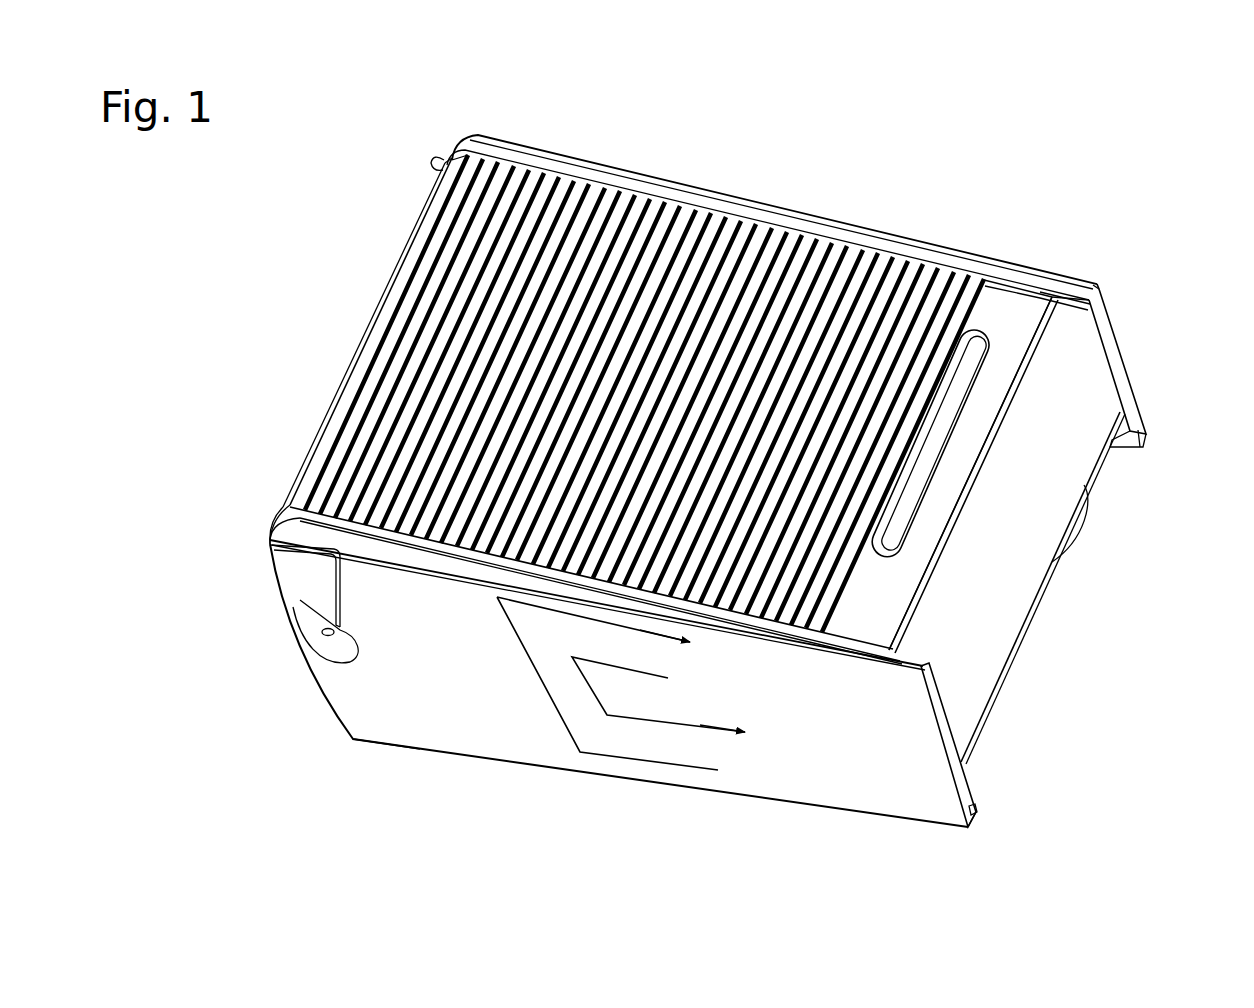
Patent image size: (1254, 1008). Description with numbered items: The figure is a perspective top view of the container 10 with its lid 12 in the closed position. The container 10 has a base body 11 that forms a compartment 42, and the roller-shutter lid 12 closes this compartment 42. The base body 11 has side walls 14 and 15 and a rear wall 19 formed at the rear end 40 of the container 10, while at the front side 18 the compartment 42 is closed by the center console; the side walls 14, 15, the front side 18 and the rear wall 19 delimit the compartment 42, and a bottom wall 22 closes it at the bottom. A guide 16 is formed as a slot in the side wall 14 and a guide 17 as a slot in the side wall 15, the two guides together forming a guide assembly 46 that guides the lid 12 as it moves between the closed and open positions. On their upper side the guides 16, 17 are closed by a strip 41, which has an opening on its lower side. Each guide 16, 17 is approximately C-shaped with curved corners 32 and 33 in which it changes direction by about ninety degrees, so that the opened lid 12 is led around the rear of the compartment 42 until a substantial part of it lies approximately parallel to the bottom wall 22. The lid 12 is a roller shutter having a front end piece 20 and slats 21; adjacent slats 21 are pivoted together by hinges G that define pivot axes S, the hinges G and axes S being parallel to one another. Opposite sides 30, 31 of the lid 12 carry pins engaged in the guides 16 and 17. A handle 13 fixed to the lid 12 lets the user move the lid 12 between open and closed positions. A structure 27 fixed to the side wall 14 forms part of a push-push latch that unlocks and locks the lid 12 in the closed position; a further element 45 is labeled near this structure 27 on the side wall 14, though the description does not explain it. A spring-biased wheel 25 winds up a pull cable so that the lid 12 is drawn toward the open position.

The container 10 is at (1062, 180).
The base body 11 is at (805, 785).
The lid 12 is at (765, 315).
The handle 13 is at (958, 402).
The side wall 14 is at (515, 717).
The side wall 15 is at (826, 228).
The guide 16 is at (983, 794).
The guide 17 is at (1152, 441).
The front side 18 is at (1028, 554).
The rear wall 19 is at (297, 607).
The front end piece 20 is at (920, 553).
The slats 21 is at (597, 195).
The bottom wall 22 is at (1012, 655).
The wheel 25 is at (1080, 520).
The structure 27 is at (325, 648).
The side of the lid 30 is at (415, 552).
The side of the lid 31 is at (868, 238).
The curved corner 32 is at (260, 528).
The curved corner 33 is at (352, 745).
The rear end 40 is at (338, 323).
The strip 41 is at (953, 763).
The compartment 42 is at (1000, 688).
The hole 45 is at (288, 619).
The guide assembly 46 is at (988, 829).
The hinges G is at (507, 165).
The pivot axes S is at (686, 195).